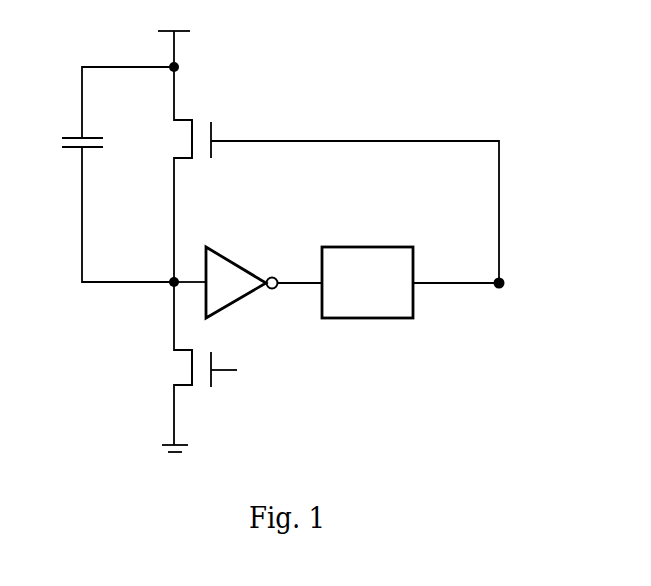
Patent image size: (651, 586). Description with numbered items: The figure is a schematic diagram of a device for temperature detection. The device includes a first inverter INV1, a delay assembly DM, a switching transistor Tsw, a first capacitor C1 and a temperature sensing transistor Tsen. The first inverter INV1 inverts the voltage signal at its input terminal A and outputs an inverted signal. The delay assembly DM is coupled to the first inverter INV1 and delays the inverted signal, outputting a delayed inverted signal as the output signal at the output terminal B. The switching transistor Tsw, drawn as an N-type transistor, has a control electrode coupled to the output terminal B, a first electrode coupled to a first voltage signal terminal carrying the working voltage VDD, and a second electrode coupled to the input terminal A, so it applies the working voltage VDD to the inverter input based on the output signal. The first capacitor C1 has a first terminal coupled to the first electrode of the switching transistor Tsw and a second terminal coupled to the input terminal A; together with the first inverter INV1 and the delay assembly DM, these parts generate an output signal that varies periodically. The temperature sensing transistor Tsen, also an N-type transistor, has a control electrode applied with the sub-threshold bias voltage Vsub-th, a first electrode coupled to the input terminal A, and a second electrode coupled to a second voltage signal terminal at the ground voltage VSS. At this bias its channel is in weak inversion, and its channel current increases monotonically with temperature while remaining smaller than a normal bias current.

The working voltage VDD is at (174, 18).
The first capacitor C1 is at (109, 172).
The switching transistor Tsw is at (325, 201).
The input terminal A is at (165, 272).
The first inverter INV1 is at (226, 268).
The delay assembly DM is at (345, 282).
The output terminal B is at (469, 274).
The temperature sensing transistor Tsen is at (178, 368).
The sub-threshold bias voltage Vsub-th is at (249, 366).
The ground voltage VSS is at (176, 462).